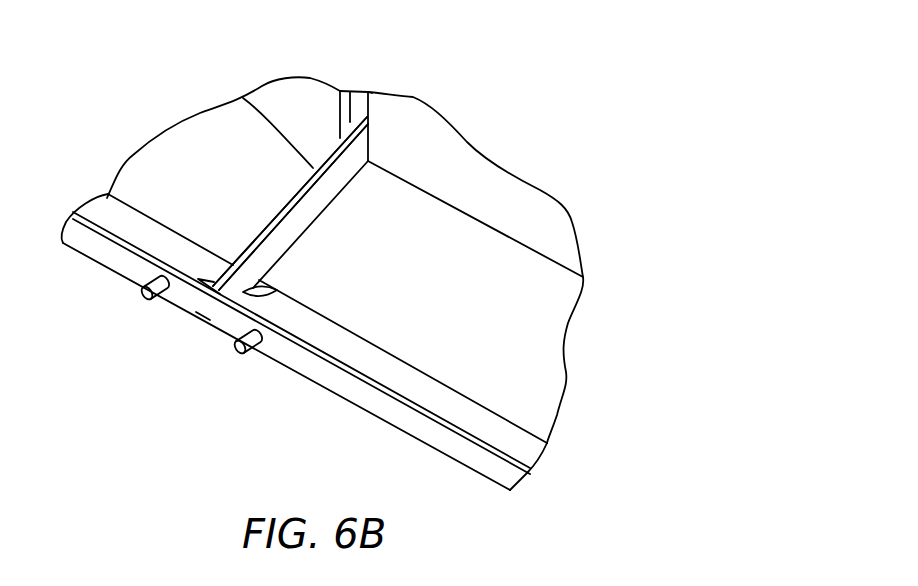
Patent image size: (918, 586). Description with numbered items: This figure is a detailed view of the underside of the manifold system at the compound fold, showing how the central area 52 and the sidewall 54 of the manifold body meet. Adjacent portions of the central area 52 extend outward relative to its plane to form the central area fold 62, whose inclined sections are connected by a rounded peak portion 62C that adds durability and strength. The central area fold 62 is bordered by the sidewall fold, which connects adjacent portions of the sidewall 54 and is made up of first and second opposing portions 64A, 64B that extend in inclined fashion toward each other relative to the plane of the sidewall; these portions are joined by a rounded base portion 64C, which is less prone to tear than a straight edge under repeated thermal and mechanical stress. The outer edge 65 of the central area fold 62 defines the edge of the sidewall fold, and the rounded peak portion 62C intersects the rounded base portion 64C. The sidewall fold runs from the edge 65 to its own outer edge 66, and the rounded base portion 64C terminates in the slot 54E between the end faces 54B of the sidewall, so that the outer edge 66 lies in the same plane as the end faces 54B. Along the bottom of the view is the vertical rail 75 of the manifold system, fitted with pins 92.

The central area 52 is at (541, 226).
The sidewall 54 is at (521, 386).
The end faces 54B is at (123, 225).
The slot 54E is at (265, 288).
The central area fold 62 is at (338, 107).
The rounded peak portion 62C is at (384, 97).
The first portion of sidewall fold 64A is at (323, 190).
The second portion of sidewall fold 64B is at (340, 138).
The rounded base portion 64C is at (272, 218).
The outer edge of central area fold 65 is at (353, 107).
The outer edge of sidewall fold 66 is at (203, 316).
The vertical rail 75 is at (387, 410).
The pins 92 is at (157, 288).